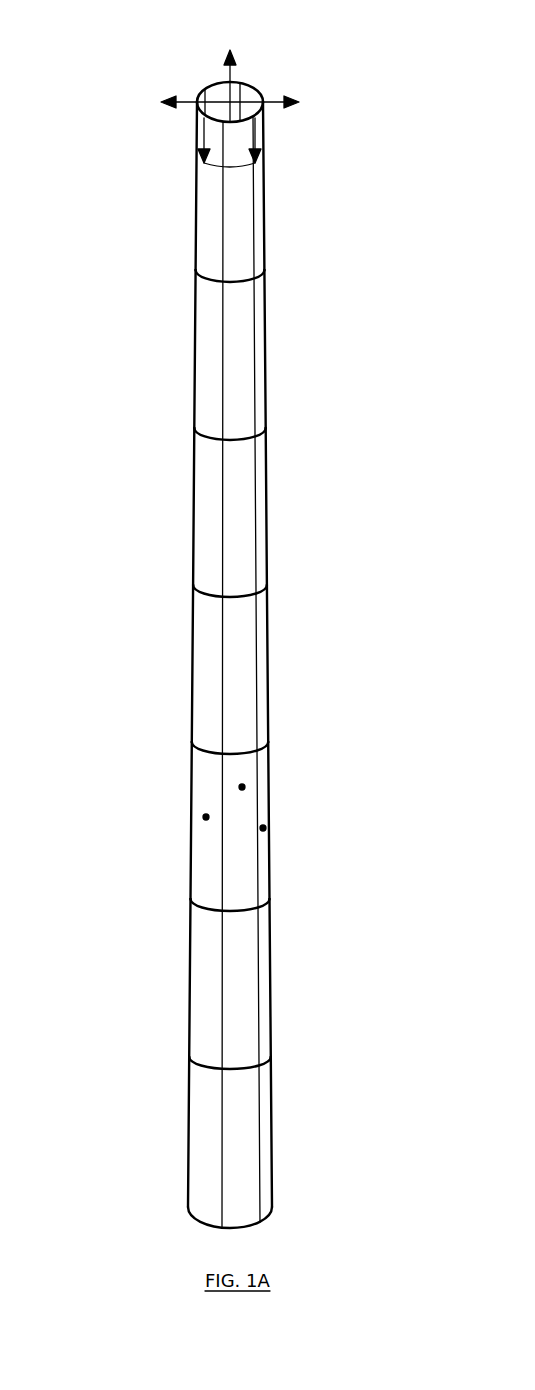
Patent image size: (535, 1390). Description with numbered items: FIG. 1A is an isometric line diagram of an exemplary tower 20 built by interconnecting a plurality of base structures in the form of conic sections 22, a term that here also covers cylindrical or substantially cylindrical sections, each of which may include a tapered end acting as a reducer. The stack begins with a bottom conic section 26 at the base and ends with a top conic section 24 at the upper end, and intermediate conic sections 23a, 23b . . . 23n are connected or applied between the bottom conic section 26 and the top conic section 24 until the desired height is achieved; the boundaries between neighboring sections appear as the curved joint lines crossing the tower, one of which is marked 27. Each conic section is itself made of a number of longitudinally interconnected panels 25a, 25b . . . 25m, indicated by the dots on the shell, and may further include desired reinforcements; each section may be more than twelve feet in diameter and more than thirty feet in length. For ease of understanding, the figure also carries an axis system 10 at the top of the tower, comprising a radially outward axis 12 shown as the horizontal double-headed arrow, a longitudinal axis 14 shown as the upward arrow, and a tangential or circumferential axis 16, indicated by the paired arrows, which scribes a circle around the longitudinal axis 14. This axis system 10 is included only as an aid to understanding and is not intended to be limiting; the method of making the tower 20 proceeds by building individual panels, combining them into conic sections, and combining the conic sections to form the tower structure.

The axis system 10 is at (180, 75).
The radially outward axis 12 is at (273, 100).
The longitudinal axis 14 is at (232, 73).
The tangential axis 16 is at (222, 165).
The tower 20 is at (328, 487).
The conic sections 22 is at (269, 164).
The top conic section 24 is at (269, 232).
The intermediate conic section 23a is at (270, 352).
The intermediate conic section 23b is at (271, 539).
The intermediate conic section 23n is at (273, 974).
The panel 25a is at (244, 786).
The panel 25b is at (204, 816).
The panel 25m is at (265, 827).
The bottom conic section 26 is at (276, 1129).
The section joint 27 is at (246, 439).